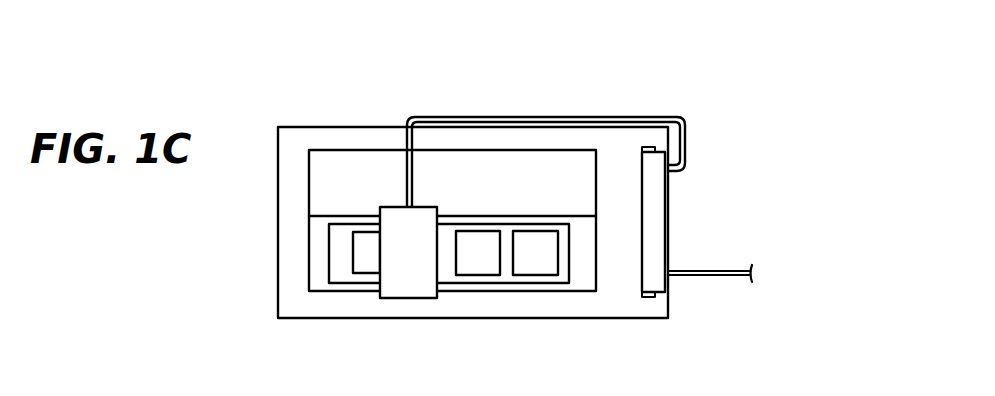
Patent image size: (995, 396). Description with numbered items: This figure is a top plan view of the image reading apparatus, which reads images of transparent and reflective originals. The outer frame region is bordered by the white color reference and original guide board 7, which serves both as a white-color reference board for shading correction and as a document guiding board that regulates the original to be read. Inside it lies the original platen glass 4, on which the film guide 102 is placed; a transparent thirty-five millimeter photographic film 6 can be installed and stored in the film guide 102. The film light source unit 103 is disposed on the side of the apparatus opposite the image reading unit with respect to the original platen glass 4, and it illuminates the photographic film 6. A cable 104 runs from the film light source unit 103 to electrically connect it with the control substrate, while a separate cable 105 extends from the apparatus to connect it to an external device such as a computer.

The original platen glass 4 is at (377, 159).
The photographic film 6 is at (367, 242).
The white color reference and original guide board 7 is at (298, 134).
The film guide 102 is at (537, 214).
The film light source unit 103 is at (421, 214).
The cable 104 is at (515, 116).
The cable 105 is at (705, 268).